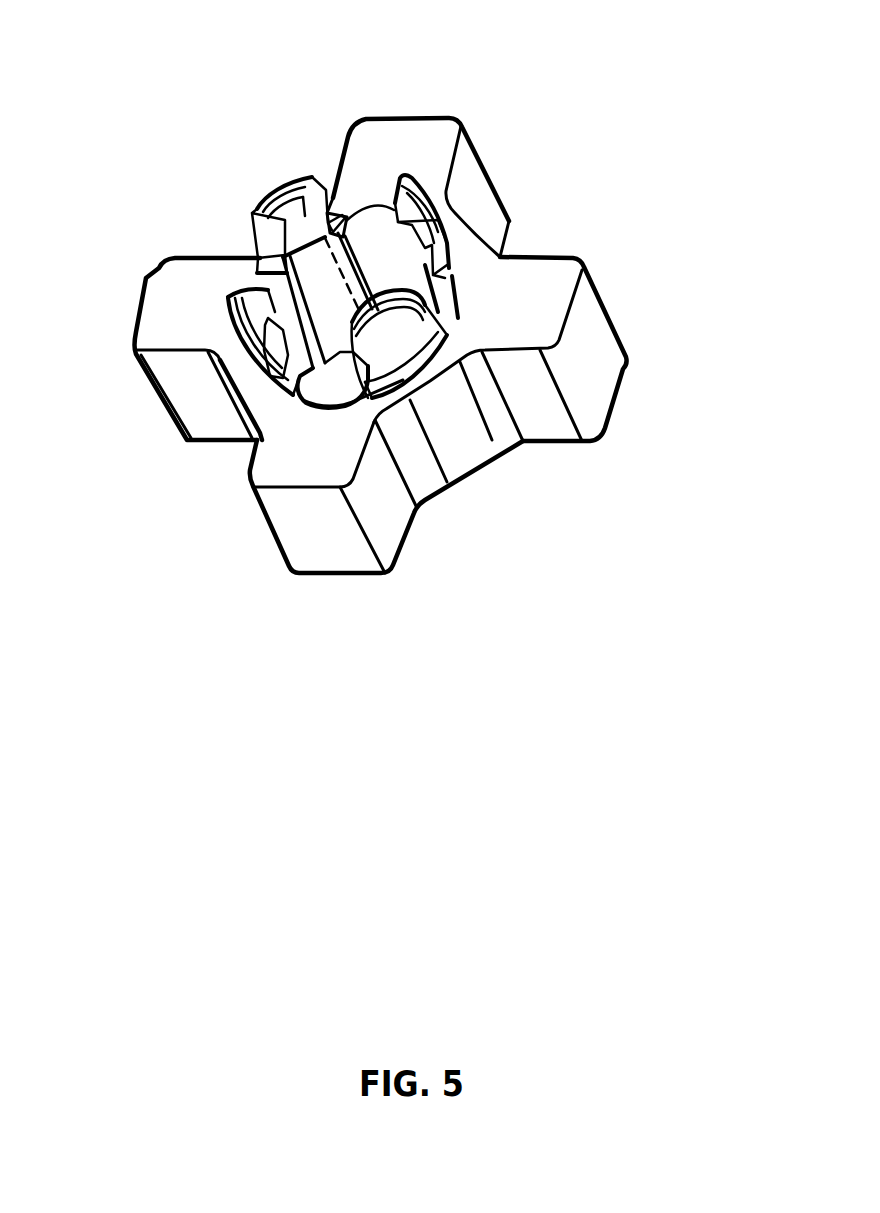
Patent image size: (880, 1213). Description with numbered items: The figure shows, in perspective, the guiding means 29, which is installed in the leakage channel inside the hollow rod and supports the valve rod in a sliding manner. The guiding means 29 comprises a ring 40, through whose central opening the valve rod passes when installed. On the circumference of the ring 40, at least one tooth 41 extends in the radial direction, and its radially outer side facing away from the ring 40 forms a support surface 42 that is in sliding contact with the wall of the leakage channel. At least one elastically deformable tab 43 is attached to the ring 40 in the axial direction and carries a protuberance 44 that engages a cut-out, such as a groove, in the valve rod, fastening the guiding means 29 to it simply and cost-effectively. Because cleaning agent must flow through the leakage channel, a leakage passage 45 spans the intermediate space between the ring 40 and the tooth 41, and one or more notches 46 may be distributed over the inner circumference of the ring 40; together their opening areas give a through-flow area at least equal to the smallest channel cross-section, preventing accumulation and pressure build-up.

The guiding means 29 is at (208, 105).
The ring 40 is at (543, 232).
The tooth 41 is at (416, 136).
The support surface 42 is at (609, 377).
The tab 43 is at (263, 228).
The protuberance 44 is at (252, 291).
The leakage passage 45 is at (506, 505).
The notch 46 is at (332, 392).